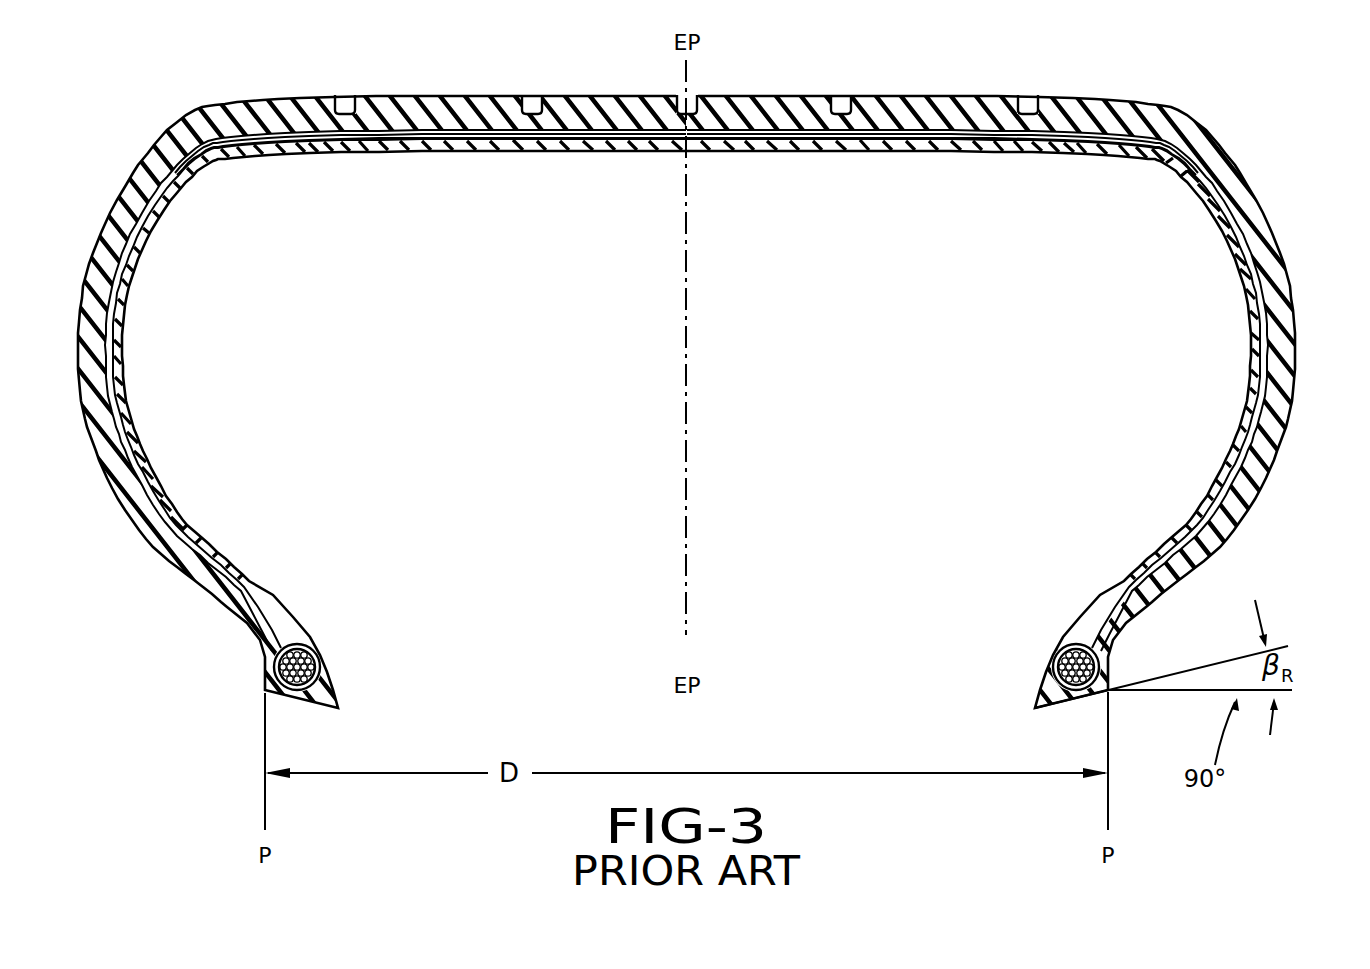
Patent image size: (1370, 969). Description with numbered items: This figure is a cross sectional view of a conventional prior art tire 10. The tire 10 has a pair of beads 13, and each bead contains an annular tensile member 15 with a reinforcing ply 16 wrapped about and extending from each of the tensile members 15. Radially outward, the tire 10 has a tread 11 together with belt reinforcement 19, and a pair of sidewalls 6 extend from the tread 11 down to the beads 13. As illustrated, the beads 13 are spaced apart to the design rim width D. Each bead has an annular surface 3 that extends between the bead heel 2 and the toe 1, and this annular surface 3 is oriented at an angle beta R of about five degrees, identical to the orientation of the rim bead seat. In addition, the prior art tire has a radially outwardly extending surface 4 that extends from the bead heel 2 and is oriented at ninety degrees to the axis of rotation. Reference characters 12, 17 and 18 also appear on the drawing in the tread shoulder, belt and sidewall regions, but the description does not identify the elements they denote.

The toe 1 is at (1035, 703).
The bead heel 2 is at (1110, 692).
The annular surface 3 is at (1073, 700).
The radially outwardly extending surface 4 is at (1120, 665).
The sidewalls 6 is at (1268, 487).
The tire 10 is at (524, 206).
The tread 11 is at (438, 90).
The tread edge 12 is at (1208, 106).
The beads 13 is at (1060, 602).
The annular tensile member 15 is at (1060, 650).
The reinforcing ply 16 is at (935, 137).
The belt ply 17 is at (835, 148).
The carcass ply 18 is at (1195, 575).
The belt reinforcement 19 is at (947, 132).